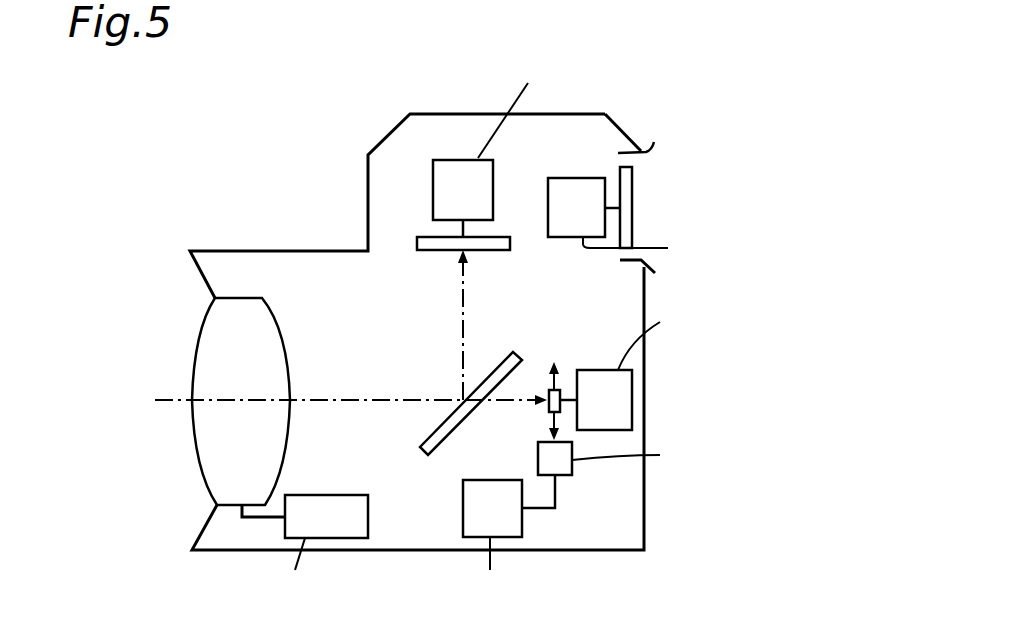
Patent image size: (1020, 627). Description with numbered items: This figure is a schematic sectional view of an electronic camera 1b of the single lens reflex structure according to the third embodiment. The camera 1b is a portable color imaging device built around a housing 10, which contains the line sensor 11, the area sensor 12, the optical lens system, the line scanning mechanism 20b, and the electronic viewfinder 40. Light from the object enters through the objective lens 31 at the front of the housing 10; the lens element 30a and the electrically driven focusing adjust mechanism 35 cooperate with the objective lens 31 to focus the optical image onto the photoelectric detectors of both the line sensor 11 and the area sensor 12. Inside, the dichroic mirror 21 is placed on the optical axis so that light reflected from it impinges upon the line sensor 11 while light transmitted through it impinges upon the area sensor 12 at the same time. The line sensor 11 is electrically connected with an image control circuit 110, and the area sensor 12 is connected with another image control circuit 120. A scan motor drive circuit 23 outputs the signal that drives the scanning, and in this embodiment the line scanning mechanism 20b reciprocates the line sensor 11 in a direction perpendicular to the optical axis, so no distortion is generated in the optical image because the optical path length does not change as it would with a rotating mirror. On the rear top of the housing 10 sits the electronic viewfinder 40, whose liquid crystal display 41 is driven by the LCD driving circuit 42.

The electronic camera 1b is at (285, 179).
The housing 10 is at (325, 251).
The image control circuit 120 is at (462, 158).
The electronic viewfinder 40 is at (634, 144).
The LCD driving circuit 42 is at (568, 178).
The LCD 41 is at (632, 190).
The area sensor 12 is at (510, 250).
The lens 30a is at (292, 346).
The objective lens 31 is at (290, 425).
The focusing adjust mechanism 35 is at (360, 495).
The dichroic mirror 21 is at (497, 356).
The line sensor 11 is at (546, 386).
The image control circuit 110 is at (632, 400).
The scan motor drive circuit 23 is at (463, 508).
The line scanning mechanism 20b is at (563, 476).